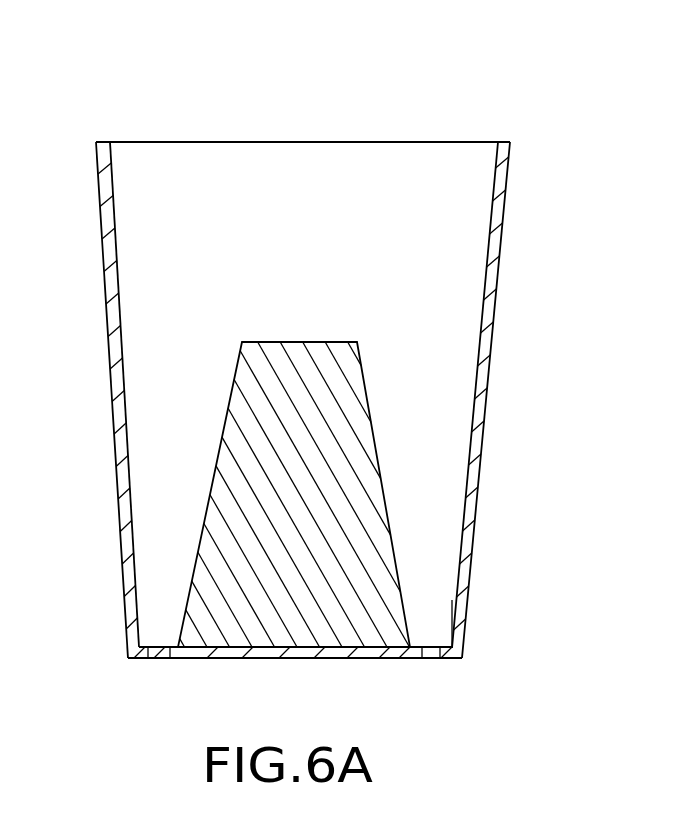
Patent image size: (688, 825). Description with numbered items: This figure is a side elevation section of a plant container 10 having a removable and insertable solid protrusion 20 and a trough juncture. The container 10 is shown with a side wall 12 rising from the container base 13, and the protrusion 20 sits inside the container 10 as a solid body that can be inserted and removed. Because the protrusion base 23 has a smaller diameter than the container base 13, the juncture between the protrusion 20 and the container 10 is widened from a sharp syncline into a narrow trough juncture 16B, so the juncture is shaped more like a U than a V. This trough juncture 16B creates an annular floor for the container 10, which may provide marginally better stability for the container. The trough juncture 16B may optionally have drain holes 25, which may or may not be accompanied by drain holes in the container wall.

The container 10 is at (123, 142).
The side wall 12 is at (115, 375).
The container base 13 is at (282, 658).
The trough juncture 16B is at (437, 640).
The protrusion 20 is at (348, 342).
The protrusion base 23 is at (383, 659).
The drain holes 25 is at (158, 659).